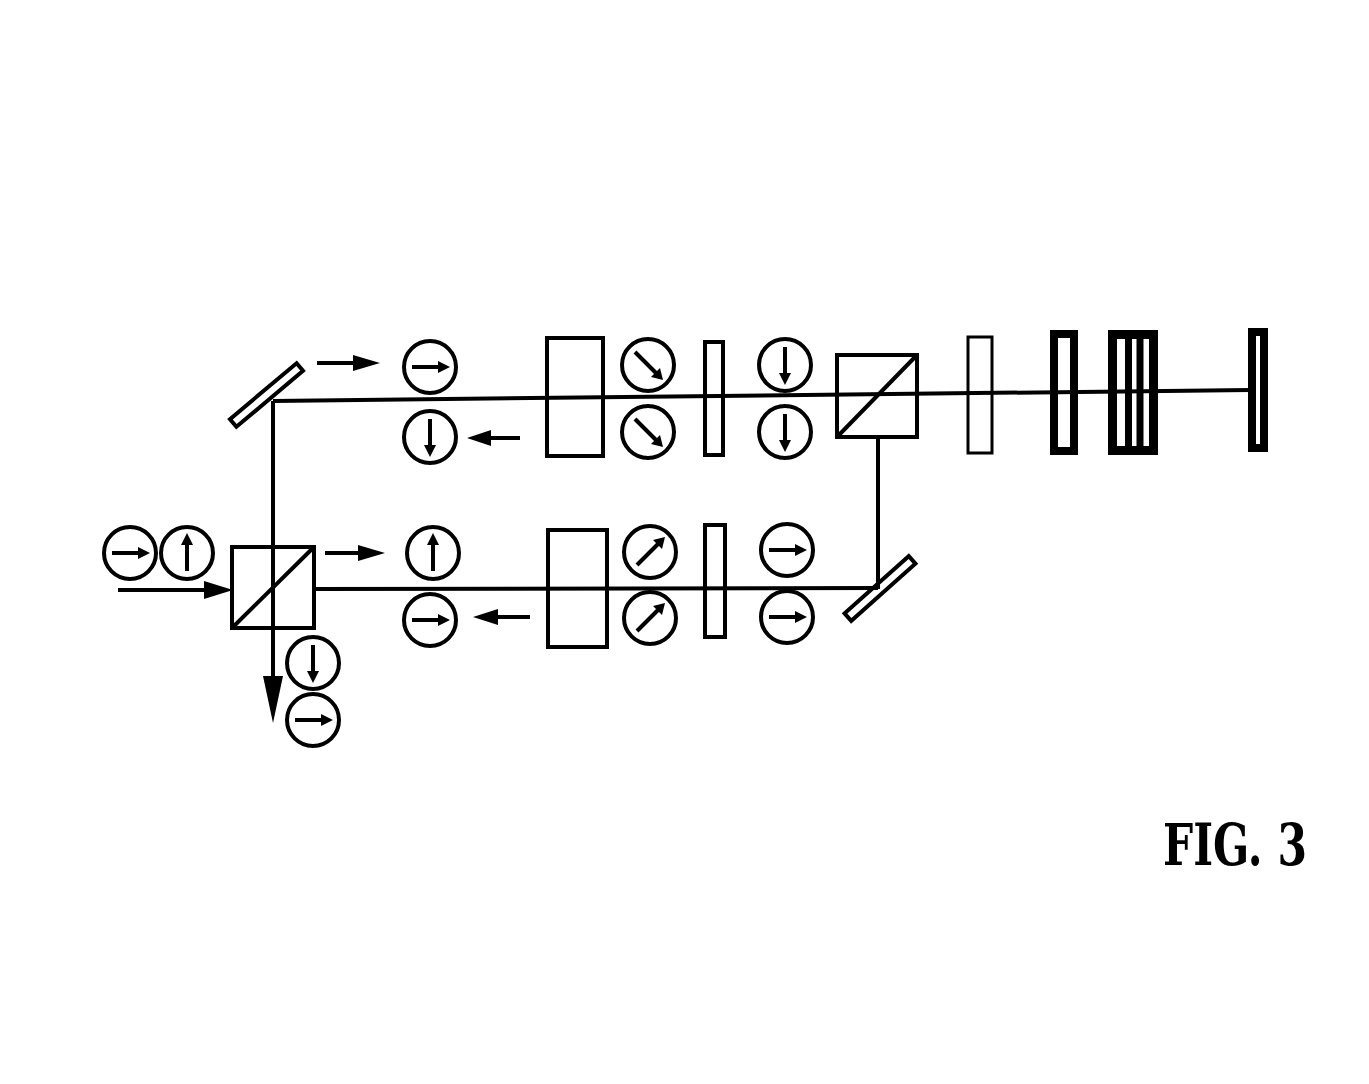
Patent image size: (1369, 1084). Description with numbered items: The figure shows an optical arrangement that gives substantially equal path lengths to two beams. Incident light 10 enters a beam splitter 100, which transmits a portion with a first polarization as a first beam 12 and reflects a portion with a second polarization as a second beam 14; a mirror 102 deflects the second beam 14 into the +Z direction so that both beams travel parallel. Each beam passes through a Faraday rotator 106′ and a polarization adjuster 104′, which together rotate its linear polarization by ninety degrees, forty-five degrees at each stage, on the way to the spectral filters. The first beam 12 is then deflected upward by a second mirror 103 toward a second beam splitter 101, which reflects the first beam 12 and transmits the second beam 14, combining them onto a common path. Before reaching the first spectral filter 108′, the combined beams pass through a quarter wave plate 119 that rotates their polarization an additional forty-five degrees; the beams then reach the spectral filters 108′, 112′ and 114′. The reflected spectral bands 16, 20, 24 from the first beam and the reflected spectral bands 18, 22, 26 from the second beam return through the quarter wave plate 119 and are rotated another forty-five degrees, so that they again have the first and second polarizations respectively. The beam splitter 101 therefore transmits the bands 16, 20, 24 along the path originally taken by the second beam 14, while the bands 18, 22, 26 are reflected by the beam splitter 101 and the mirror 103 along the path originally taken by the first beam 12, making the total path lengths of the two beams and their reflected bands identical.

The incident light 10 is at (138, 574).
The first beam 12 is at (596, 589).
The second beam 14 is at (756, 523).
The reflected spectral band 16 is at (374, 402).
The reflected spectral band 20 is at (374, 402).
The reflected spectral band 24 is at (374, 402).
The reflected spectral band 18 is at (394, 607).
The reflected spectral band 22 is at (394, 607).
The reflected spectral band 26 is at (394, 607).
The beam splitter 100 is at (243, 547).
The second beam splitter 101 is at (870, 355).
The mirror 102 is at (260, 400).
The second mirror 103 is at (893, 588).
The polarization adjuster 104′ is at (573, 647).
The Faraday rotator 106′ is at (567, 338).
The first spectral filter 108′ is at (1136, 173).
The spectral filter 112′ is at (1218, 185).
The spectral filter 114′ is at (1360, 207).
The quarter wave plate 119 is at (982, 337).